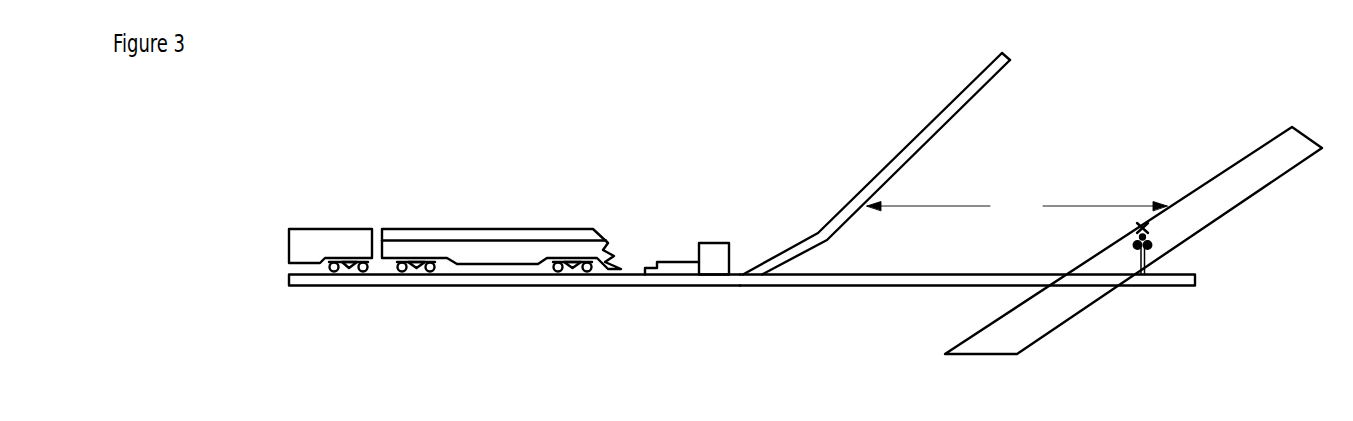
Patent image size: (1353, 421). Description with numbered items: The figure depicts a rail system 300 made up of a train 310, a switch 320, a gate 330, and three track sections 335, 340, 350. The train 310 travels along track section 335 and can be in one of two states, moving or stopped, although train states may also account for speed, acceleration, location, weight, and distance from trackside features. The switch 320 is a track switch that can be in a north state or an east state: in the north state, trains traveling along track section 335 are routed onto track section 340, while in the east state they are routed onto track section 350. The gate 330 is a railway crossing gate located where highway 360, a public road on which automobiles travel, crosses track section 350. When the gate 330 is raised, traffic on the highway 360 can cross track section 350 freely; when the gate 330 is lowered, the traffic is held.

The rail system 300 is at (233, 159).
The train 310 is at (497, 229).
The switch 320 is at (723, 243).
The gate 330 is at (1146, 247).
The track section 335 is at (537, 279).
The track section 340 is at (977, 82).
The track section 350 is at (890, 280).
The highway 360 is at (1253, 163).